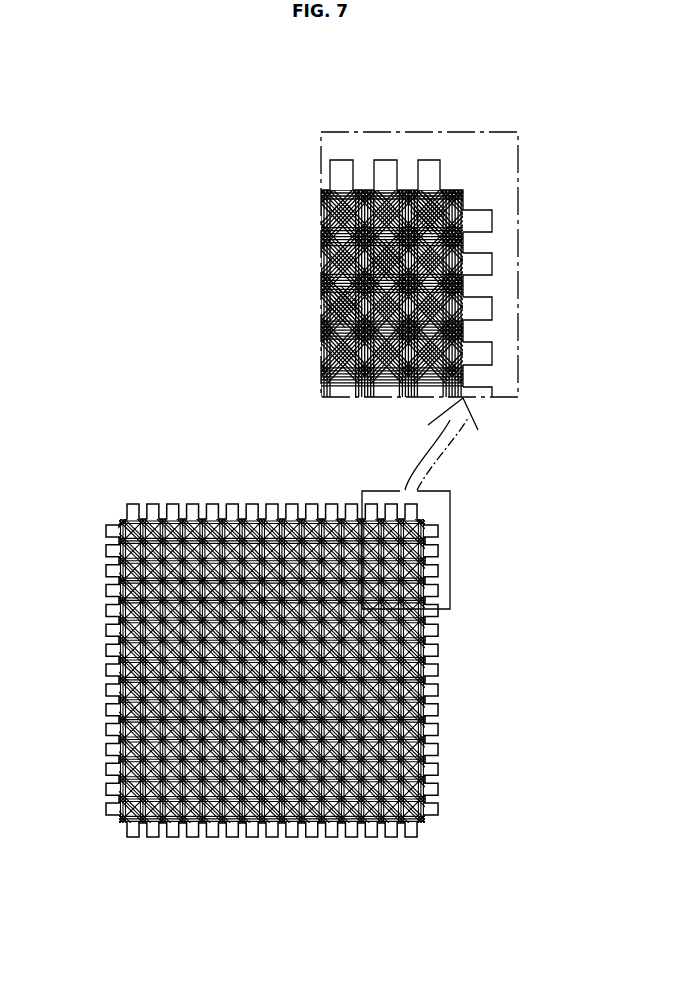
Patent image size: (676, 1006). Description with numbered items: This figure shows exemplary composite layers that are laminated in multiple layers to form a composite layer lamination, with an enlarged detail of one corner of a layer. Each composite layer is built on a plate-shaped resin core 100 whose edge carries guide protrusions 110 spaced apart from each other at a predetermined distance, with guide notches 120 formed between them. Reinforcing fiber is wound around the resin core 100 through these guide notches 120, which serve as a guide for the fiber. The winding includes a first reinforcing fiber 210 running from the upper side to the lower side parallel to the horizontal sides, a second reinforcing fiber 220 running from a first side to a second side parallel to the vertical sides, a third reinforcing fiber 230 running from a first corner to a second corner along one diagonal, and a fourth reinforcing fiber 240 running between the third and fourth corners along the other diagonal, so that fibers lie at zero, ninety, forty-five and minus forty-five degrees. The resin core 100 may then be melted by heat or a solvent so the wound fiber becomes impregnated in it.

The resin core 100 is at (94, 506).
The guide protrusions 110 is at (430, 175).
The guide notches 120 is at (414, 170).
The first reinforcing fiber 210 is at (342, 235).
The second reinforcing fiber 220 is at (415, 262).
The third reinforcing fiber 230 is at (437, 203).
The fourth reinforcing fiber 240 is at (463, 212).